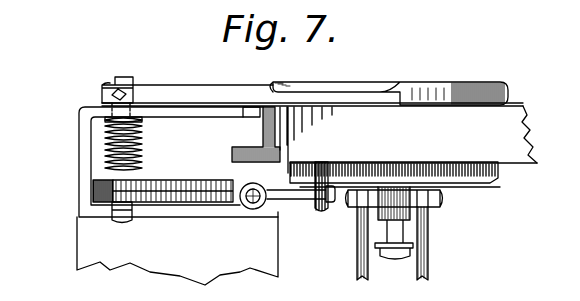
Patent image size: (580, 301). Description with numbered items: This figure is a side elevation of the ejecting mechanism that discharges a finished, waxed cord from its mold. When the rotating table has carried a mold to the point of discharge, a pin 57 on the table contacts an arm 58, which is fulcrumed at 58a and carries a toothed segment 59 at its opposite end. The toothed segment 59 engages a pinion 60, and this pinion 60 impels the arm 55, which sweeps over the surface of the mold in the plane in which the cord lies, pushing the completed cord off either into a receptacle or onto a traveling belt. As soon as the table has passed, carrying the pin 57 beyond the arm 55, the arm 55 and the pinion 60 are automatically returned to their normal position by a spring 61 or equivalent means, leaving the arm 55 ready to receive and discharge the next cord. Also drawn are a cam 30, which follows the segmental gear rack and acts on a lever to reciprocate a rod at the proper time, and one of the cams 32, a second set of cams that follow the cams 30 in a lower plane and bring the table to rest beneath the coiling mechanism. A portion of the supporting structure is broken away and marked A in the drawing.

The arm 55 is at (396, 86).
The spring 61 is at (105, 141).
The pinion 60 is at (93, 190).
The toothed segment 59 is at (178, 173).
The arm 58 is at (273, 212).
The fulcrum 58a is at (245, 207).
The pin 57 is at (327, 212).
The cams 32 is at (233, 152).
The cam 30 is at (253, 118).
The body plate A is at (523, 168).